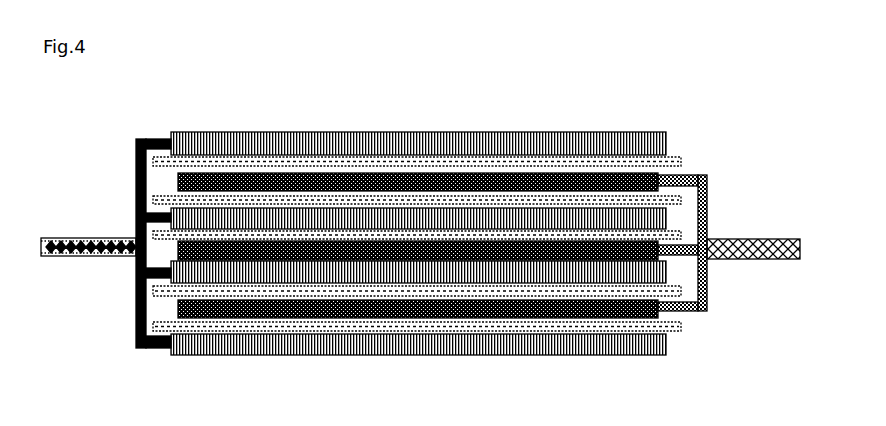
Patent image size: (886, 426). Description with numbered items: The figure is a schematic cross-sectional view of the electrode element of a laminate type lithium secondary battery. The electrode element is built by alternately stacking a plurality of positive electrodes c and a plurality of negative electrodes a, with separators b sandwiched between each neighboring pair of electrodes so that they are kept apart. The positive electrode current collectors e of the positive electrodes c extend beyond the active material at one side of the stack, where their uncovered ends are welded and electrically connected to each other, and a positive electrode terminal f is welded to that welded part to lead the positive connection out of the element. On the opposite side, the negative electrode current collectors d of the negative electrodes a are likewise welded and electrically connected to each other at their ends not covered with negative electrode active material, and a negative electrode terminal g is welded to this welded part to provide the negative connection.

The negative electrode a is at (273, 117).
The separator b is at (668, 142).
The positive electrode c is at (171, 307).
The negative electrode current collector d is at (121, 286).
The positive electrode current collector e is at (707, 296).
The positive electrode terminal f is at (735, 224).
The negative electrode terminal g is at (86, 226).